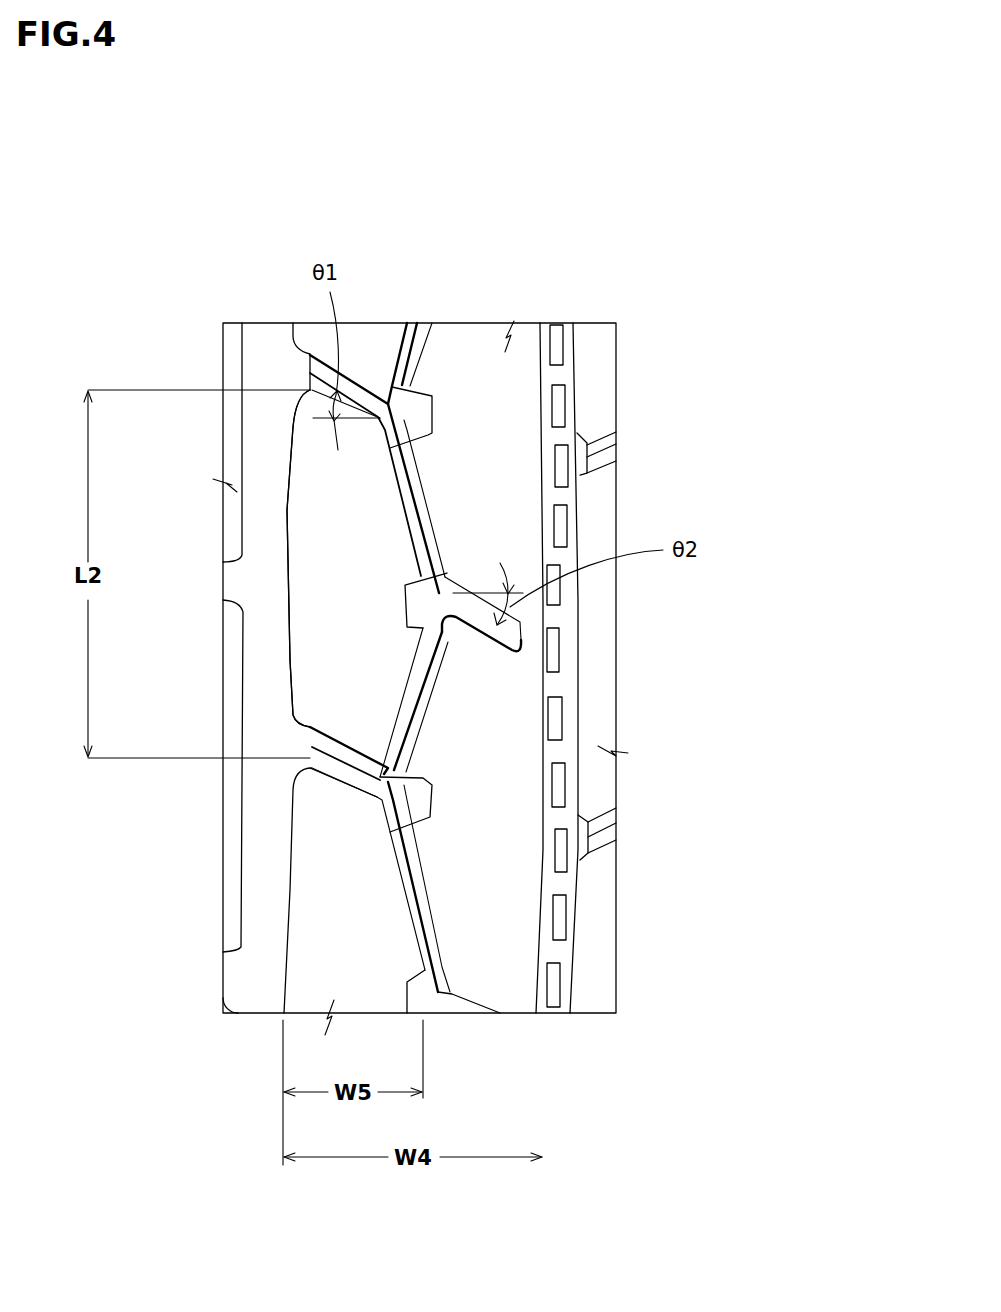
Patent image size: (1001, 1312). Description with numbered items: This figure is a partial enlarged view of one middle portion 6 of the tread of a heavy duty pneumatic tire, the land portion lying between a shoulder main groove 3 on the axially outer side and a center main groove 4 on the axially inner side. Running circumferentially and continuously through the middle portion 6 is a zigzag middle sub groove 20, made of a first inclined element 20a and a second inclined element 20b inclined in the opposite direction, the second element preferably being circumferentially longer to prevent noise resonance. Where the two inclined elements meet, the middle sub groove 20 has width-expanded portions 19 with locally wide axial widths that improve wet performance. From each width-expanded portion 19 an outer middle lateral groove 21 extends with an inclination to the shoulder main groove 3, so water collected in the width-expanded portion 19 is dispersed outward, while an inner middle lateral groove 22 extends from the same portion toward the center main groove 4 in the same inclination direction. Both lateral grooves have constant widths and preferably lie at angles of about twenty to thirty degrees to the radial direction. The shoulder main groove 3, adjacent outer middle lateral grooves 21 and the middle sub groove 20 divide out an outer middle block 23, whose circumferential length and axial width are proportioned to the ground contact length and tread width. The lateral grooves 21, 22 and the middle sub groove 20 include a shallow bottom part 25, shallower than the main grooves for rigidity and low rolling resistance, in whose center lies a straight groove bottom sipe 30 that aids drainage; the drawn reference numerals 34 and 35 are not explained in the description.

The shoulder main groove 3 is at (267, 352).
The center main groove 4 is at (543, 358).
The middle portion 6 is at (458, 357).
The width-expanded portion 19 is at (413, 418).
The middle sub groove 20 is at (777, 705).
The first inclined element 20a is at (418, 700).
The second inclined element 20b is at (425, 913).
The outer middle lateral groove 21 is at (368, 383).
The inner middle lateral groove 22 is at (471, 640).
The outer middle block 23 is at (320, 541).
The shallow bottom part 25 is at (402, 872).
The groove bottom sipe 30 is at (505, 630).
The groove bottom portion 34 is at (467, 993).
The groove wall portion 35 is at (417, 793).